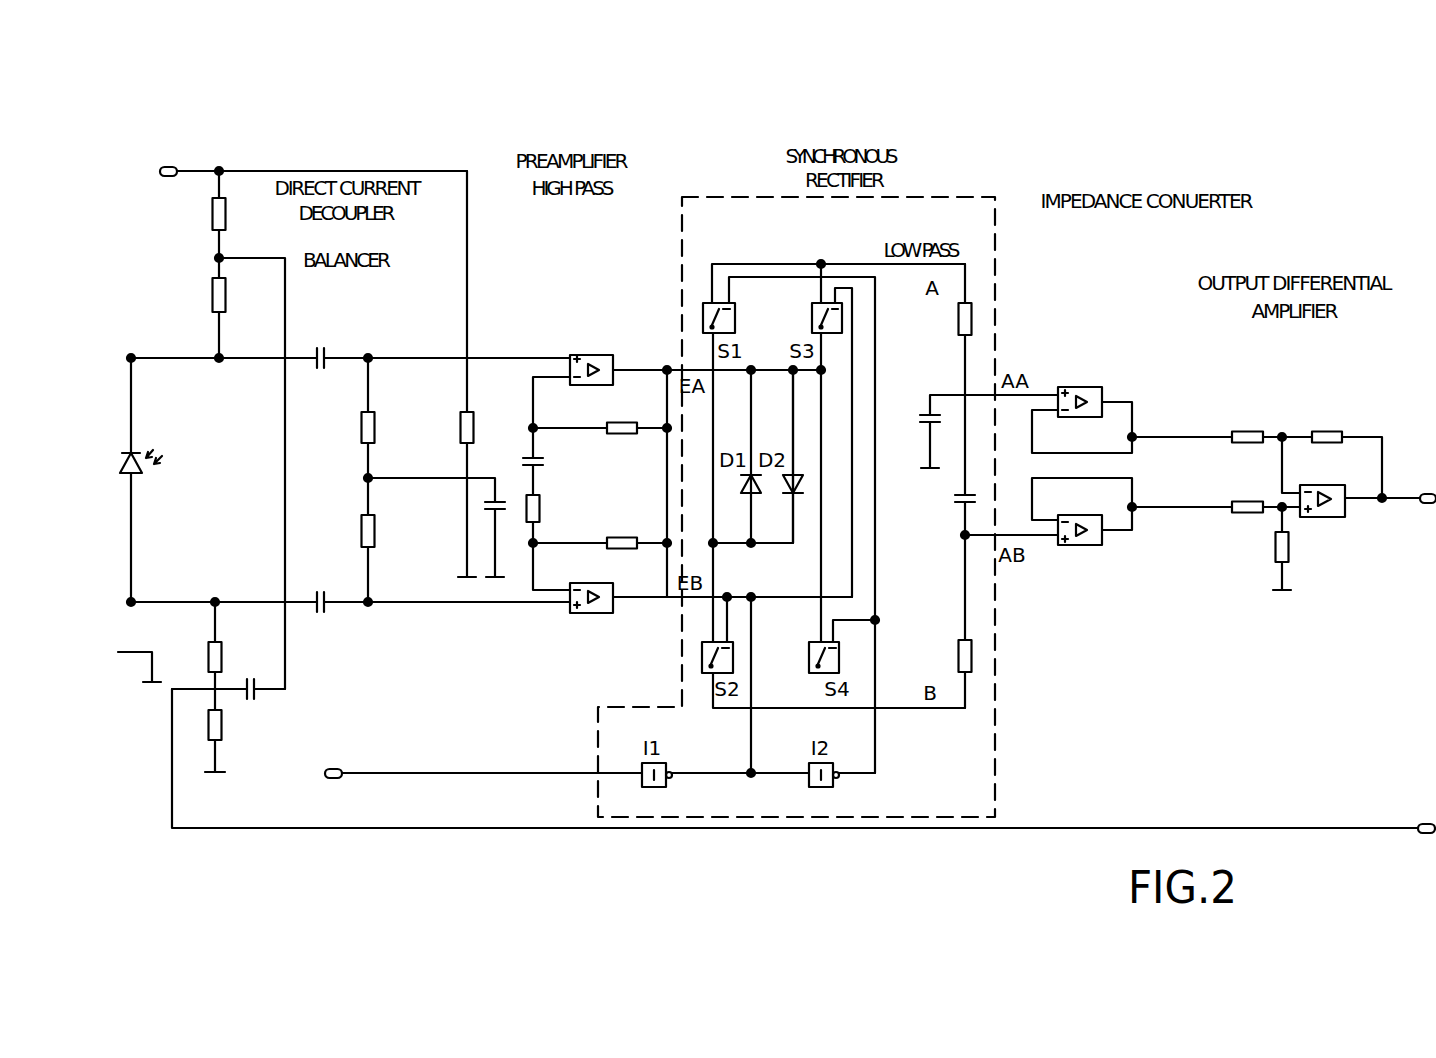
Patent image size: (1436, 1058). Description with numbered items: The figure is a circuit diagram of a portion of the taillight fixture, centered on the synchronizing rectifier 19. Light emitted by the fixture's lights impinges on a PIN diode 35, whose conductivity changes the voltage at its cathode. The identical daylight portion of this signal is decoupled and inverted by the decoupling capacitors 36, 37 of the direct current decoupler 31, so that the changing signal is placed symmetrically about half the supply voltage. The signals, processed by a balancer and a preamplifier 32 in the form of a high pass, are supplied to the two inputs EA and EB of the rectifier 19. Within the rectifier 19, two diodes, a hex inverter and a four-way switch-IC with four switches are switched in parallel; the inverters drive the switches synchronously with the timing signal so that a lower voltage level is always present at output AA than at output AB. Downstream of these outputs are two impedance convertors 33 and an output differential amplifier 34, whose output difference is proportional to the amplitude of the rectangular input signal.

The synchronizing rectifier 19 is at (930, 214).
The direct current decoupler 31 is at (438, 315).
The preamplifier 32 is at (583, 355).
The impedance convertor 33 is at (1085, 387).
The output differential amplifier 34 is at (1336, 419).
The PIN diode 35 is at (138, 470).
The decoupling capacitor 36 is at (322, 358).
The decoupling capacitor 37 is at (326, 606).